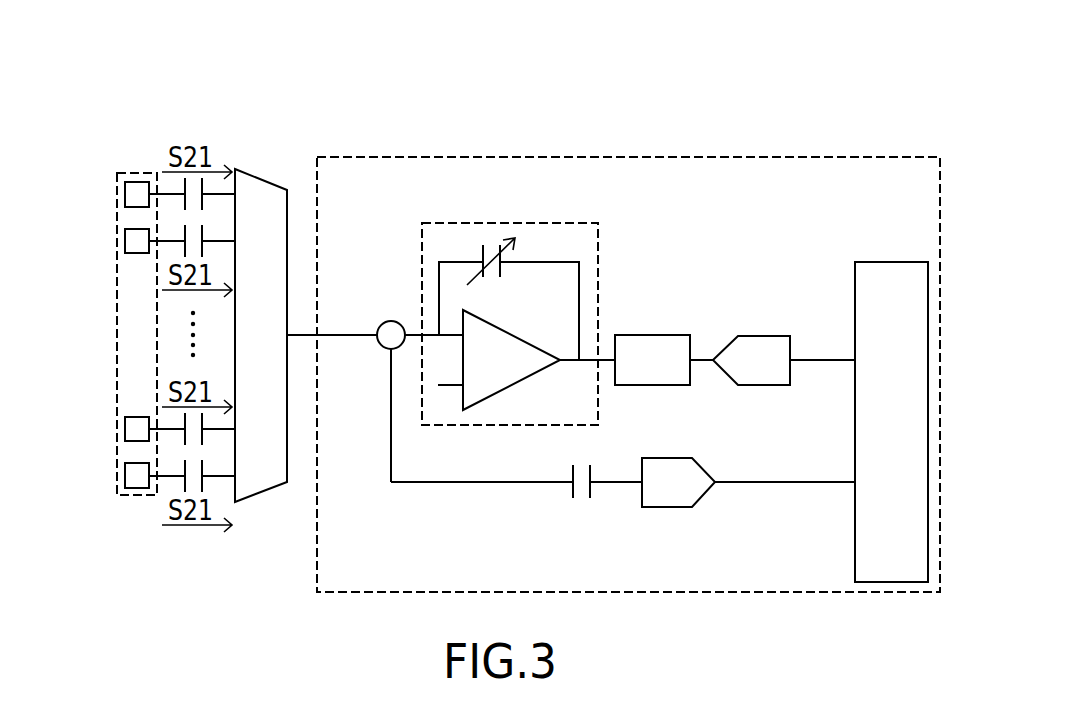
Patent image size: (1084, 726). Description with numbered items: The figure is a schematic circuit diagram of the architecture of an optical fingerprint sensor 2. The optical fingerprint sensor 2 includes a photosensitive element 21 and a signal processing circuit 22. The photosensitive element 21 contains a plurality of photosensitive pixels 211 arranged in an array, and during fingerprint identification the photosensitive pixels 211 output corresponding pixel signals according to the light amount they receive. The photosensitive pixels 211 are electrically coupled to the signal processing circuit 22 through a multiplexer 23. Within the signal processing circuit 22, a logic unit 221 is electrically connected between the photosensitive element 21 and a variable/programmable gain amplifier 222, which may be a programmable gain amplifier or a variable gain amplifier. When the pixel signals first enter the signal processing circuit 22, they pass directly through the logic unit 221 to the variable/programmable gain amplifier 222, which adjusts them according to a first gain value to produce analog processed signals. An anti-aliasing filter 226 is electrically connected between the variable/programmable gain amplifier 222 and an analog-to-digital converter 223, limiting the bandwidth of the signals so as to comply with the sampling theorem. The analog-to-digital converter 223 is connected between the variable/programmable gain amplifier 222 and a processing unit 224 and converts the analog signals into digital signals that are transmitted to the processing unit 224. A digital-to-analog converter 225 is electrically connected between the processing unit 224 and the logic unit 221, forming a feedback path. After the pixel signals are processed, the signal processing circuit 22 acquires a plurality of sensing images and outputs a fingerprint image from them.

The optical fingerprint sensor 2 is at (763, 66).
The photosensitive element 21 is at (114, 480).
The photosensitive pixels 211 is at (137, 193).
The signal processing circuit 22 is at (823, 146).
The multiplexer 23 is at (253, 483).
The logic unit 221 is at (388, 340).
The variable/programmable gain amplifier 222 is at (539, 213).
The analog-to-digital converter 223 is at (760, 347).
The processing unit 224 is at (893, 272).
The digital-to-analog converter 225 is at (665, 475).
The anti-aliasing filter 226 is at (653, 347).